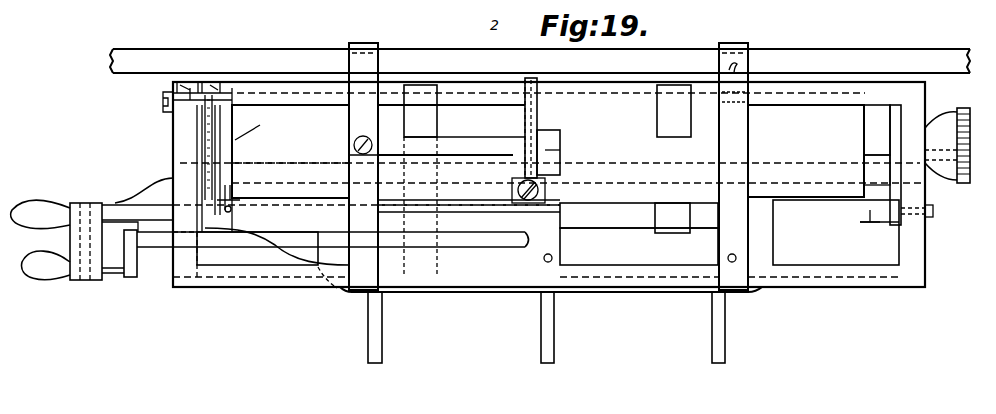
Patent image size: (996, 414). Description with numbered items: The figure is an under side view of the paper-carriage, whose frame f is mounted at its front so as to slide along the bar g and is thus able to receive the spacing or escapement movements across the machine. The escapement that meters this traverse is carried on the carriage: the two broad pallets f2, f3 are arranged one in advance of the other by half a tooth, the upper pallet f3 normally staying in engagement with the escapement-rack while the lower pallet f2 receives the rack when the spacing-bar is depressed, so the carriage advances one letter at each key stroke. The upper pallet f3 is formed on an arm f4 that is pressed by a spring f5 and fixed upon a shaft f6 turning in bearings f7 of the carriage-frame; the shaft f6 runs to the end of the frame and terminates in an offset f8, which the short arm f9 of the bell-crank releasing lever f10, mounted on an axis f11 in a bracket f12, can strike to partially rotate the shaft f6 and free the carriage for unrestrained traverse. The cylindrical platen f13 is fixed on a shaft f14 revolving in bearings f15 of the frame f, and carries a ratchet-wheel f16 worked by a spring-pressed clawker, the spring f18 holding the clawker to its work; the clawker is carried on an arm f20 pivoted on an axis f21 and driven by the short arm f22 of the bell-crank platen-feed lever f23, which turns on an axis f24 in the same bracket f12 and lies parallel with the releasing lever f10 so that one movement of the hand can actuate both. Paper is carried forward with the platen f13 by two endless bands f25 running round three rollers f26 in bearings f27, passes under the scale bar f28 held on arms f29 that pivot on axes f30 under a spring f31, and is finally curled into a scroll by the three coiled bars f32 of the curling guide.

The bar g is at (540, 62).
The frame f is at (549, 159).
The lower pallet f2 is at (590, 118).
The upper pallet f3 is at (525, 120).
The arm f4 is at (520, 262).
The spring f5 is at (445, 137).
The shaft or spindle f6 is at (160, 247).
The bearings f7 is at (192, 252).
The offset f8 is at (132, 277).
The short arm f9 is at (112, 273).
The bell-crank releasing lever f10 is at (46, 265).
The axis of motion f11 is at (80, 280).
The bracket f12 is at (331, 206).
The cylindrical platen f13 is at (548, 151).
The shaft or spindle f14 is at (877, 130).
The bearings f15 is at (912, 150).
The ratchet-wheel f16 is at (247, 134).
The spring f18 is at (250, 226).
The arm or lever f20 is at (197, 140).
The axis of motion f21 is at (163, 98).
The short arm f22 is at (163, 205).
The bell-crank lever f23 is at (224, 157).
The axis f24 is at (90, 201).
The endless bands f25 is at (547, 159).
The rollers f26 is at (582, 88).
The bearings f27 is at (790, 212).
The bar f28 is at (308, 152).
The arms f29 is at (240, 198).
The axes of motion f30 is at (232, 209).
The spring f31 is at (885, 228).
The bars f32 is at (557, 327).